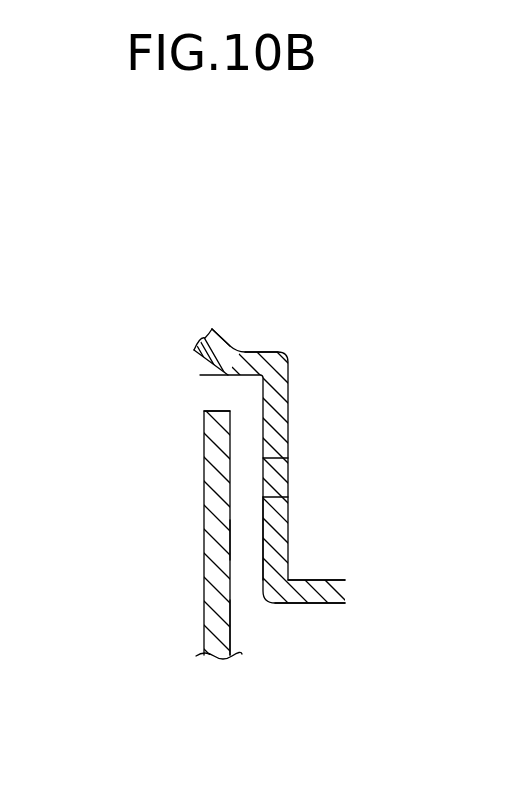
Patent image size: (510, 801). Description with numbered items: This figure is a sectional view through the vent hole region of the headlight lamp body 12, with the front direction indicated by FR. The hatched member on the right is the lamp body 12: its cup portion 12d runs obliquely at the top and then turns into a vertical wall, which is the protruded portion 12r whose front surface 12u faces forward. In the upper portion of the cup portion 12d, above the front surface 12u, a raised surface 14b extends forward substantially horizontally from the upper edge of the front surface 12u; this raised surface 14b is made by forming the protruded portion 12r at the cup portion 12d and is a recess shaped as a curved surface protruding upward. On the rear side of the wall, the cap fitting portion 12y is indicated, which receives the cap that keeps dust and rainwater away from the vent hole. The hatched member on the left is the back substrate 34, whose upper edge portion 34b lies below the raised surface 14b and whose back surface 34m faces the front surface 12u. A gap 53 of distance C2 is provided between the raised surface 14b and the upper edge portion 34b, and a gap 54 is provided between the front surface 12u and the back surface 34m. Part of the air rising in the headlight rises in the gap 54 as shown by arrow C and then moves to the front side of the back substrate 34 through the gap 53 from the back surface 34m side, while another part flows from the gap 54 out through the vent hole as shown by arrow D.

The lamp body 12 is at (262, 330).
The cup portion 12d is at (221, 337).
The raised surface 14b is at (288, 392).
The cap fitting portion 12y is at (289, 483).
The front surface 12u is at (258, 575).
The protruded portion 12r is at (313, 616).
The gap 53 is at (198, 375).
The back substrate 34 is at (196, 592).
The upper edge portion 34b is at (218, 408).
The back surface 34m is at (241, 654).
The gap 54 is at (218, 546).
The distance C2 is at (262, 376).
The arrow C is at (238, 440).
The arrow D is at (249, 523).
The front direction FR is at (118, 218).